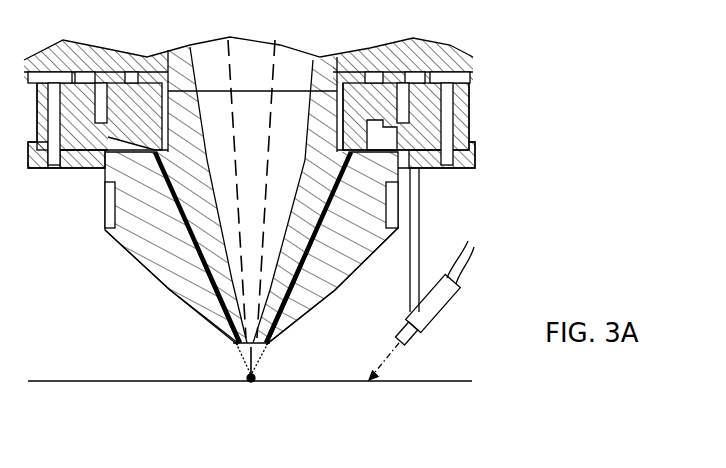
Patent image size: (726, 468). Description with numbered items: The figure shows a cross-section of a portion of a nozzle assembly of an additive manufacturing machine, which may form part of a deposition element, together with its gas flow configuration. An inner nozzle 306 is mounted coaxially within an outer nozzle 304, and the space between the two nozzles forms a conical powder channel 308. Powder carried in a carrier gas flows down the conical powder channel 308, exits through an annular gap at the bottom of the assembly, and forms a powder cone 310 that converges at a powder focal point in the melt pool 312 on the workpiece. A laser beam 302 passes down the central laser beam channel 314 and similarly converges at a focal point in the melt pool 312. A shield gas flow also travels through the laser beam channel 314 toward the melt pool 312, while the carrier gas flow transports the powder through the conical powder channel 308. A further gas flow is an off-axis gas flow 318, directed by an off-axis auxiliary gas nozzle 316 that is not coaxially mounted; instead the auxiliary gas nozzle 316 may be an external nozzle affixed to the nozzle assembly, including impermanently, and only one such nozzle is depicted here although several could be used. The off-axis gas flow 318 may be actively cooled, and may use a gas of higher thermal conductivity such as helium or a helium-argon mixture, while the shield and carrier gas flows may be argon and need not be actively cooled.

The laser beam 302 is at (237, 173).
The outer nozzle 304 is at (167, 270).
The inner nozzle 306 is at (220, 290).
The conical powder channel 308 is at (241, 356).
The powder cone 310 is at (240, 358).
The melt pool 312 is at (256, 378).
The laser beam channel 314 is at (227, 226).
The off-axis auxiliary gas nozzle 316 is at (443, 314).
The off-axis gas flow 318 is at (383, 368).